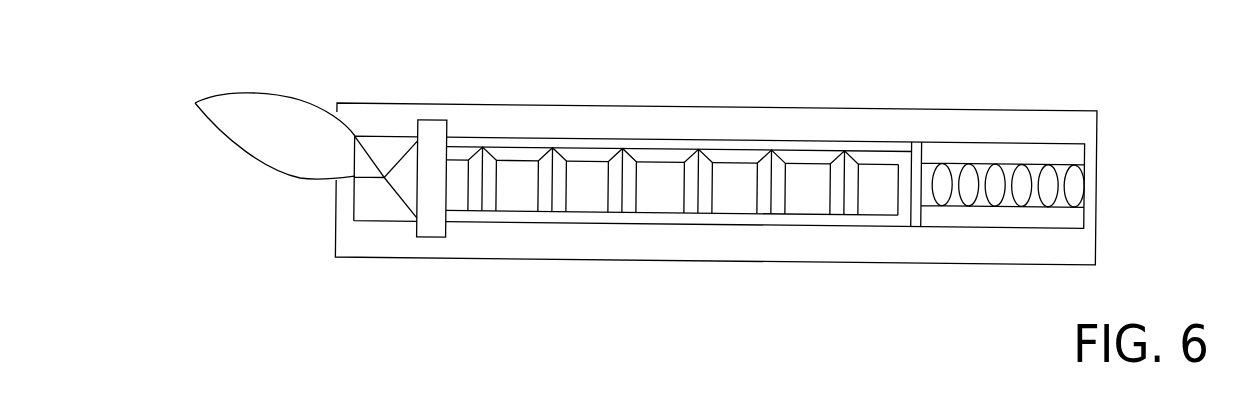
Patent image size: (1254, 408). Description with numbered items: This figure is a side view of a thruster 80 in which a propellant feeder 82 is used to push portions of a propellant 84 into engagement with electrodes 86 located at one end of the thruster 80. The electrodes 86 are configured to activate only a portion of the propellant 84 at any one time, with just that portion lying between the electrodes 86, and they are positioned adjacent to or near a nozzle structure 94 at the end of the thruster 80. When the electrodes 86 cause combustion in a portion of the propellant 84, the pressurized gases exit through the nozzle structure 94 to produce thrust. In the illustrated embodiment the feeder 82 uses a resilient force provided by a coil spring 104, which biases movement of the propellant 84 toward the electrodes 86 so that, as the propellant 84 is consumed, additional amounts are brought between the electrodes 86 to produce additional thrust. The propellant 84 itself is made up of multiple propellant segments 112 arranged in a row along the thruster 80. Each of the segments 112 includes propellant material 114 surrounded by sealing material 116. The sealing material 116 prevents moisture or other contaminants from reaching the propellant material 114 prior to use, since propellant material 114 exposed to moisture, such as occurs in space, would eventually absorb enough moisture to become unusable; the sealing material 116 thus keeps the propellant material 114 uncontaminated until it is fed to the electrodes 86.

The thruster 80 is at (568, 70).
The propellant feeder 82 is at (987, 135).
The propellant 84 is at (658, 118).
The electrodes 86 is at (435, 120).
The nozzle structure 94 is at (363, 208).
The coil spring 104 is at (1058, 168).
The propellant segments 112 is at (750, 135).
The propellant material 114 is at (733, 198).
The sealing material 116 is at (700, 199).